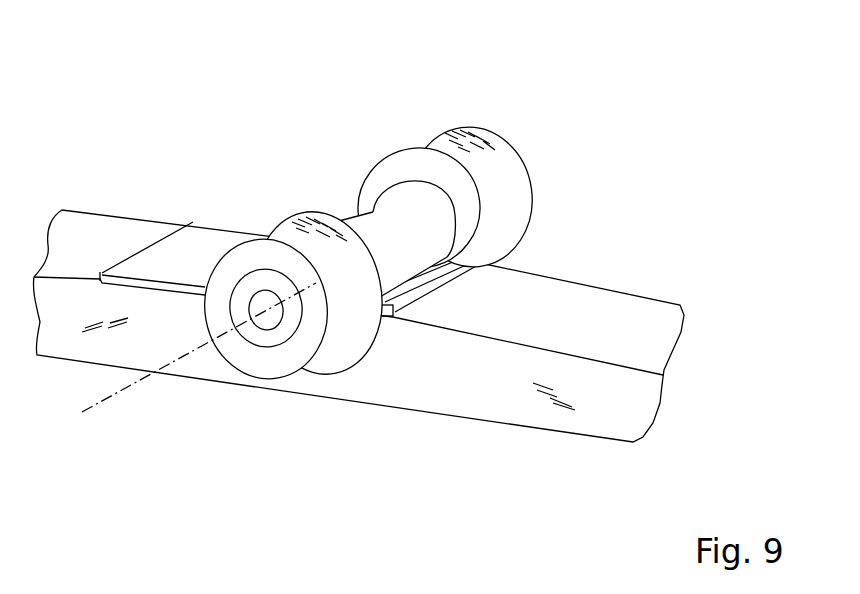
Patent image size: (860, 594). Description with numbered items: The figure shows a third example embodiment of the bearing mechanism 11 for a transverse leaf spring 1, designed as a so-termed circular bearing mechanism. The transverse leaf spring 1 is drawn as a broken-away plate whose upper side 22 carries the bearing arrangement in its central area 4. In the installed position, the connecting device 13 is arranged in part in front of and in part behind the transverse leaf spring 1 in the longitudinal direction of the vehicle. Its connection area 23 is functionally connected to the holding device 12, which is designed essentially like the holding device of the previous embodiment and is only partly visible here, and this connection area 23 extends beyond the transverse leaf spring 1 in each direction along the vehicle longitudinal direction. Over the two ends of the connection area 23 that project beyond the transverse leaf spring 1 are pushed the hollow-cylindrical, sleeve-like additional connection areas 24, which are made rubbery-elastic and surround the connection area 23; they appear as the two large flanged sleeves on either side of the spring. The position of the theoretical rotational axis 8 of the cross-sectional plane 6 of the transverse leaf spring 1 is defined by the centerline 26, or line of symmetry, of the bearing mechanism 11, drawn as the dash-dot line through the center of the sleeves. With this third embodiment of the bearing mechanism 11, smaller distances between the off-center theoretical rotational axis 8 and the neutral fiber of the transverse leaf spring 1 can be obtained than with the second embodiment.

The transverse leaf spring 1 is at (640, 252).
The central area of the transverse leaf spring 4 is at (310, 425).
The cross-sectional plane of the transverse leaf spring 6 is at (327, 363).
The theoretical rotational axis 8 is at (103, 402).
The bearing mechanism 11 is at (423, 289).
The holding device 12 is at (423, 289).
The connecting device 13 is at (393, 317).
The upper side of the transverse leaf spring 22 is at (203, 240).
The connection area 23 is at (397, 223).
The additional connection area 24 is at (423, 289).
The centerline 26 is at (199, 418).